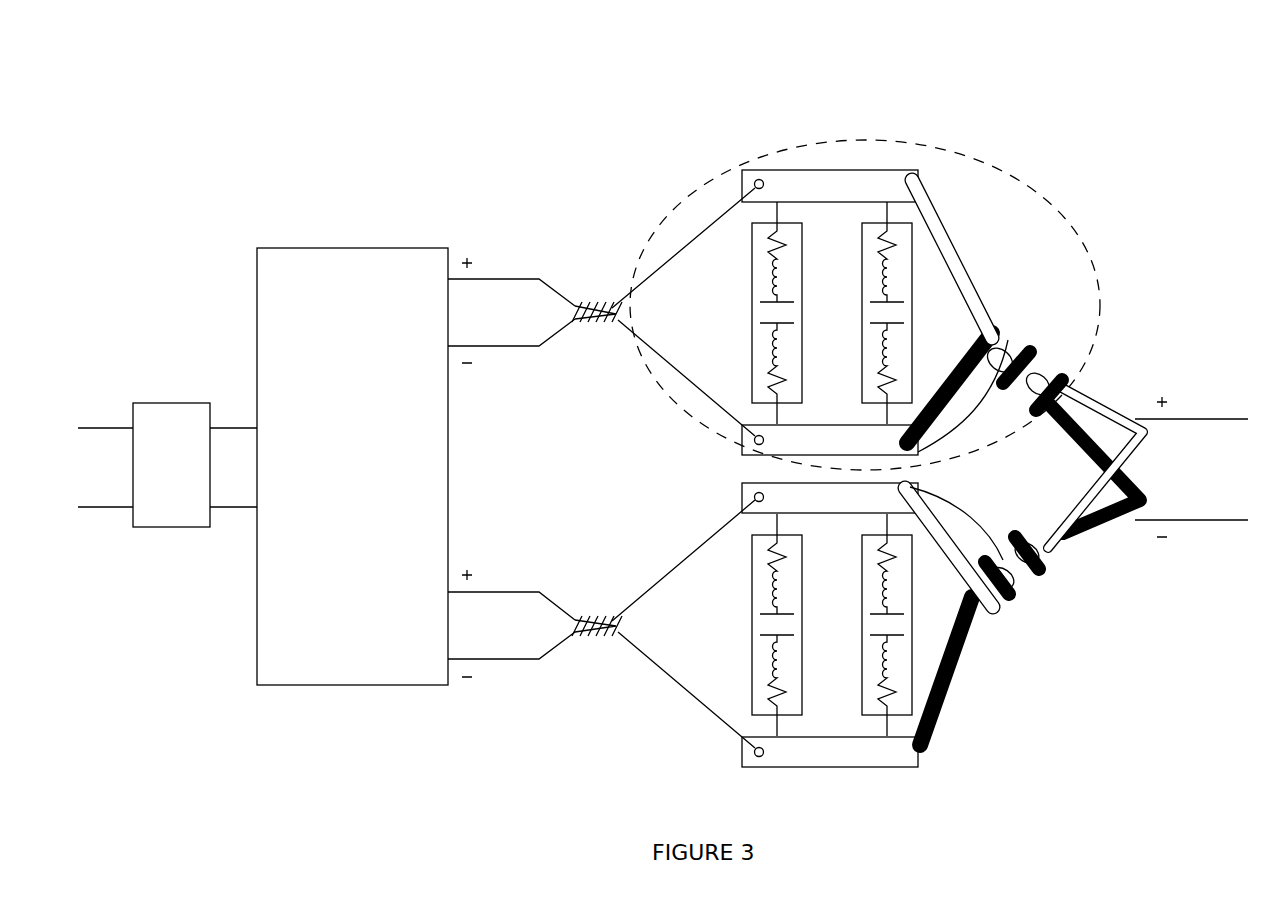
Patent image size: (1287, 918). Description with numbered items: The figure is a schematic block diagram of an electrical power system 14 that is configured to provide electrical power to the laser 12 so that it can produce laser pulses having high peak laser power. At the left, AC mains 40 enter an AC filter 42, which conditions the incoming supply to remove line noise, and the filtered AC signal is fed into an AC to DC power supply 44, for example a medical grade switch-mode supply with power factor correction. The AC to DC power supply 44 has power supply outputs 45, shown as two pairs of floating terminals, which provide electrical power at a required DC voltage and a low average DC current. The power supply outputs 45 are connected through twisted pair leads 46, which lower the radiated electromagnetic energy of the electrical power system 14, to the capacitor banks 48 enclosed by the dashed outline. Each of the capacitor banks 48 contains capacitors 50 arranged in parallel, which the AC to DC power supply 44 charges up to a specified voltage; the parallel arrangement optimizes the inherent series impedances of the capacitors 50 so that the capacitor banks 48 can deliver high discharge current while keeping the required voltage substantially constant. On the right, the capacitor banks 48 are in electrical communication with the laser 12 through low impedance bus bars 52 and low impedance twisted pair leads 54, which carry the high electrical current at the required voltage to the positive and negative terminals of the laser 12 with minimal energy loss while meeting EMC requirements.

The laser 12 is at (1192, 419).
The electrical power system 14 is at (260, 83).
The AC mains 40 is at (100, 428).
The AC filter 42 is at (175, 403).
The AC to DC power supply 44 is at (375, 248).
The power supply outputs 45 is at (508, 279).
The twisted pair leads 46 is at (597, 303).
The capacitor banks 48 is at (713, 165).
The capacitors 50 is at (808, 230).
The low impedance bus bars 52 is at (1000, 365).
The low impedance twisted pair leads 54 is at (1062, 377).